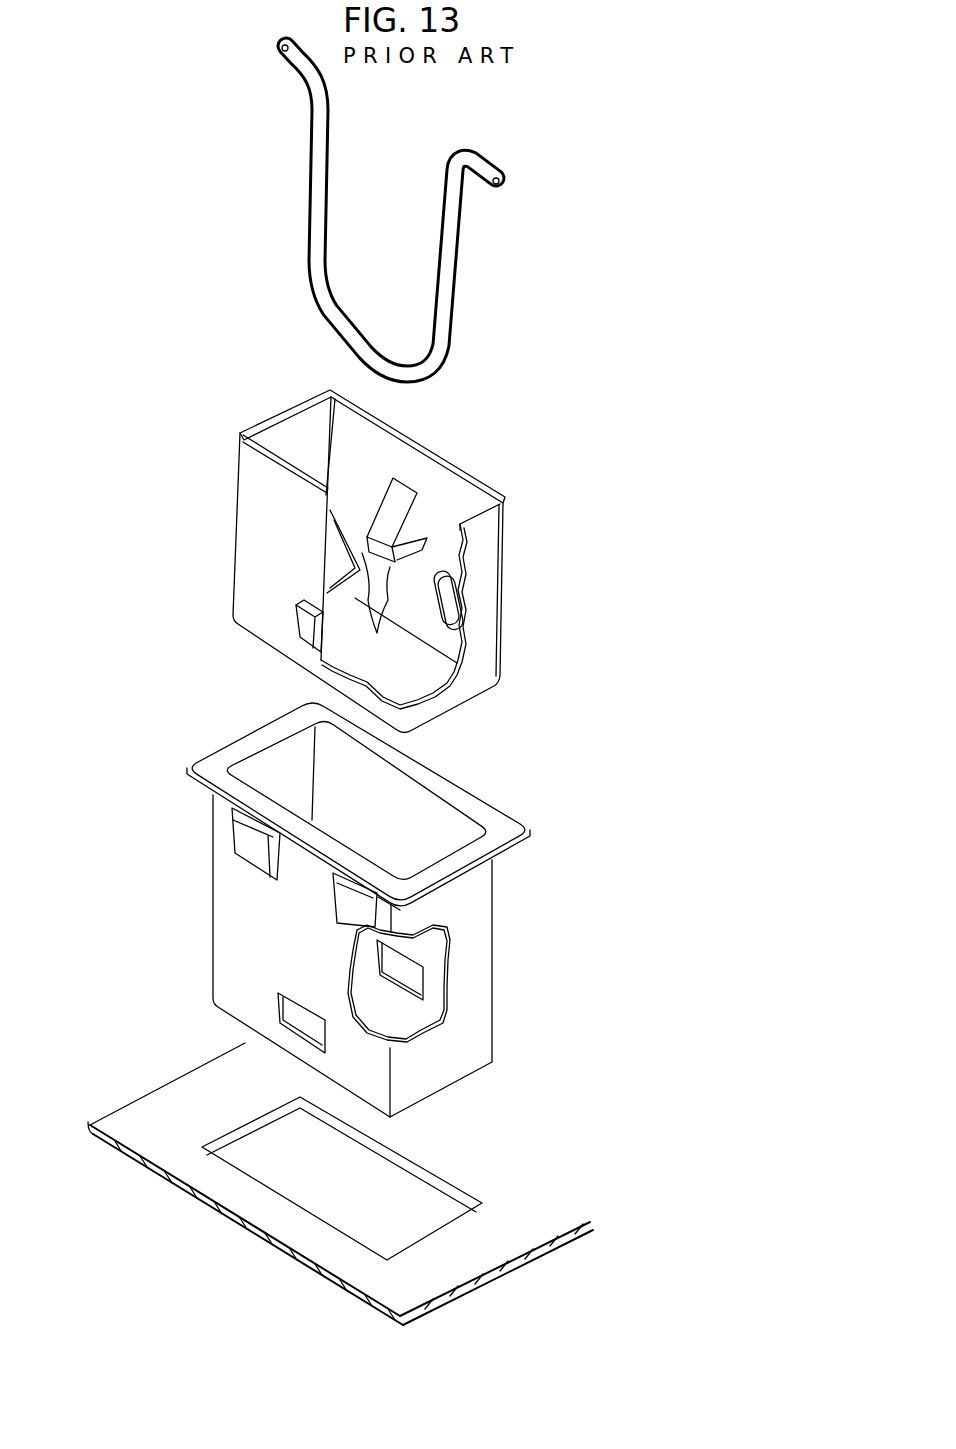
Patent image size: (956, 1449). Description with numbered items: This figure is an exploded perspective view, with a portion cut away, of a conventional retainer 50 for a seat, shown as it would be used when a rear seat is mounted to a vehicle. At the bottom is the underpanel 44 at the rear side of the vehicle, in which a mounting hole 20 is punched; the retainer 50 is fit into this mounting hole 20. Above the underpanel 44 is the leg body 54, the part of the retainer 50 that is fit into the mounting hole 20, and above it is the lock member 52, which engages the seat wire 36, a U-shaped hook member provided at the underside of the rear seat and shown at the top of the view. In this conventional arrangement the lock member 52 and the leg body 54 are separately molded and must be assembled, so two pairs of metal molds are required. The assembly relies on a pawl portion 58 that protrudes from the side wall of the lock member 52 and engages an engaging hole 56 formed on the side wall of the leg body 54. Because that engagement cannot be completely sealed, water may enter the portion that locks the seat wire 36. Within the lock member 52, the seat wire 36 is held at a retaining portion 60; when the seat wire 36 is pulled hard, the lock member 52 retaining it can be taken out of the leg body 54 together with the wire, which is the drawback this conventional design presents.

The seat wire 36 is at (455, 287).
The retainer for seat 50 is at (414, 753).
The lock member 52 is at (416, 561).
The leg body 54 is at (382, 910).
The engaging hole 56 is at (415, 981).
The pawl portion 58 is at (290, 627).
The retaining portion 60 is at (394, 572).
The underpanel 44 is at (340, 1184).
The mounting hole 20 is at (402, 1182).